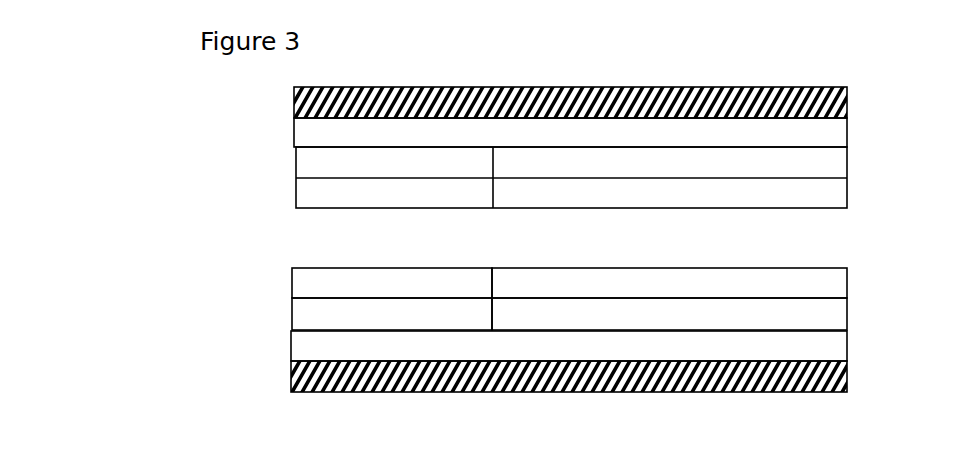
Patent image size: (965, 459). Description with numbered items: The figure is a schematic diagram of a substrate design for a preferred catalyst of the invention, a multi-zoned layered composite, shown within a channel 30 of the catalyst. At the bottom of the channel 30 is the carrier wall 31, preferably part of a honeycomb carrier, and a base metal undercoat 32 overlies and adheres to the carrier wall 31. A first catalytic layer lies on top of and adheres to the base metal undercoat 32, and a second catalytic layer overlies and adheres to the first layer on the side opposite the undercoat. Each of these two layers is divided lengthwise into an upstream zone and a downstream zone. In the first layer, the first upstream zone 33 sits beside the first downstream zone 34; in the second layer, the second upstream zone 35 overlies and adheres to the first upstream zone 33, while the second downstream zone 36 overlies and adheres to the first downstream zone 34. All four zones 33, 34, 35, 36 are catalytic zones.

The channel 30 is at (568, 313).
The carrier wall 31 is at (289, 379).
The base metal undercoat 32 is at (289, 349).
The first upstream zone 33 is at (289, 319).
The first downstream zone 34 is at (848, 313).
The second upstream zone 35 is at (289, 291).
The second downstream zone 36 is at (848, 278).